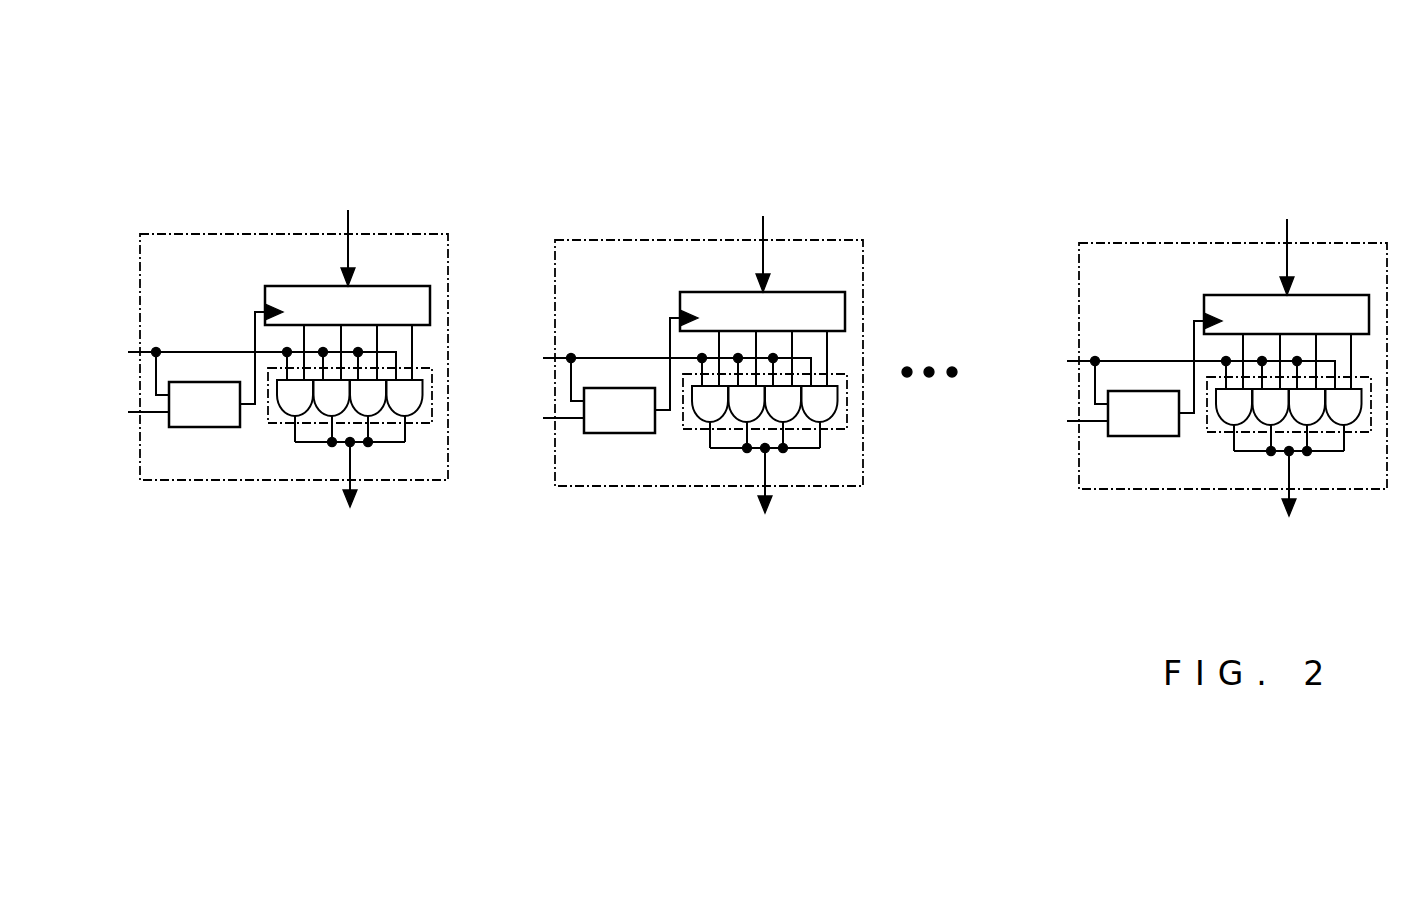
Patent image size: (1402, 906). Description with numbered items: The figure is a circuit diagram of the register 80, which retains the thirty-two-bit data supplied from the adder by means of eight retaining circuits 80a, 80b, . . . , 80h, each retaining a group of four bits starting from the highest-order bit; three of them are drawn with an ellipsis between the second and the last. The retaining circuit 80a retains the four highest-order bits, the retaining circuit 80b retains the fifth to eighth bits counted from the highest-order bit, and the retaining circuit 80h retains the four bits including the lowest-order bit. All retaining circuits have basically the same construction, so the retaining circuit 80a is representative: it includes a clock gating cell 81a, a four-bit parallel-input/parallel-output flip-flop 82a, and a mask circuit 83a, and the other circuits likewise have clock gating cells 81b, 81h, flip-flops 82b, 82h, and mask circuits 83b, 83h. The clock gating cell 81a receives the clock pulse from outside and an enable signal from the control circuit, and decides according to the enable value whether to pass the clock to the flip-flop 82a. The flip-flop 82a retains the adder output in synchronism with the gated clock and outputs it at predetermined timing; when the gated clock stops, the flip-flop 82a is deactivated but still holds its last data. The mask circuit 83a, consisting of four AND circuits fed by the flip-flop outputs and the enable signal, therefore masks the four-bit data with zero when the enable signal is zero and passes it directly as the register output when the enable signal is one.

The register 80 is at (1342, 114).
The retaining circuit 80a is at (168, 234).
The retaining circuit 80b is at (669, 367).
The retaining circuit 80h is at (1193, 370).
The clock gating cell 81a is at (190, 427).
The clock gating cell 81b is at (619, 435).
The clock gating cell 81h is at (1143, 438).
The flip-flop 82a is at (275, 286).
The flip-flop 82b is at (758, 318).
The flip-flop 82h is at (1282, 321).
The mask circuit 83a is at (275, 423).
The mask circuit 83b is at (760, 443).
The mask circuit 83h is at (1284, 446).